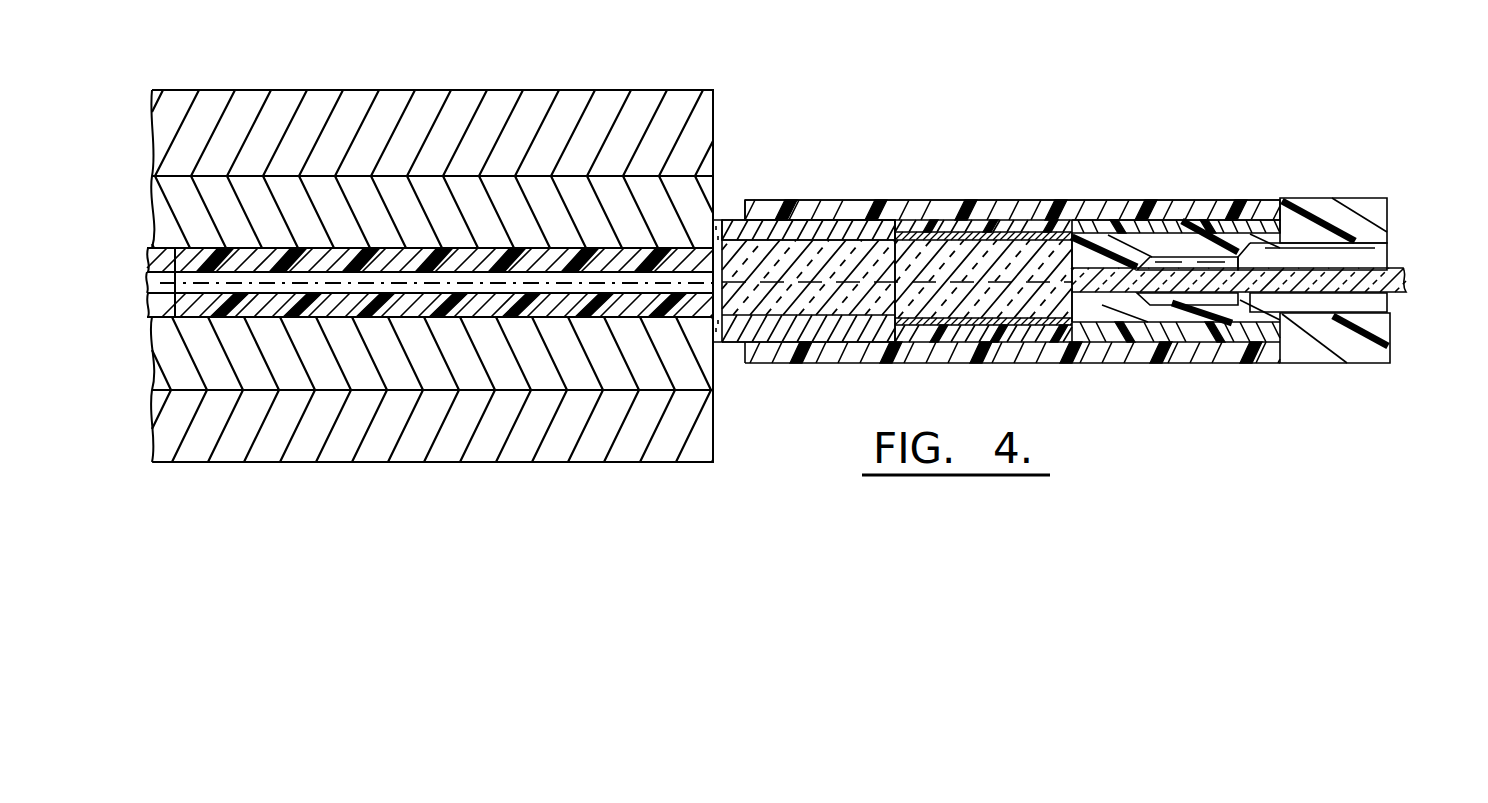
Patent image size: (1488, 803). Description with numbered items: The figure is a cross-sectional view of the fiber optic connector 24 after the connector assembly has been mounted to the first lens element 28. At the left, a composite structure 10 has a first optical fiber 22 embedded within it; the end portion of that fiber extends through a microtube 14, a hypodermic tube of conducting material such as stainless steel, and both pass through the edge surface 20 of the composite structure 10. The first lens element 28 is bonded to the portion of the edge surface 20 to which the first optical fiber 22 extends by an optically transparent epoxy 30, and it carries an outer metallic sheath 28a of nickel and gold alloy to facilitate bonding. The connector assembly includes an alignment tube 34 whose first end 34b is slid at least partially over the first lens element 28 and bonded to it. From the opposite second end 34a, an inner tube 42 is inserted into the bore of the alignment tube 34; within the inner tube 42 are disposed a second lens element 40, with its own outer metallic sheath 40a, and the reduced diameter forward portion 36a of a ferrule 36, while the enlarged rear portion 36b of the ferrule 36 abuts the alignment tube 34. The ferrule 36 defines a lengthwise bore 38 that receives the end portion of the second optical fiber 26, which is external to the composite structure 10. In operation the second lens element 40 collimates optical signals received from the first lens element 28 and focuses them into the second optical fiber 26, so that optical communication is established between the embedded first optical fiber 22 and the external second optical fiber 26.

The composite structure 10 is at (683, 60).
The microtube 14 is at (676, 254).
The edge surface 20 is at (713, 112).
The first optical fiber 22 is at (693, 290).
The fiber optic connector 24 is at (1083, 182).
The second optical fiber 26 is at (1382, 280).
The first lens element 28 is at (785, 256).
The outer metallic sheath 28a is at (848, 232).
The optically transparent epoxy 30 is at (717, 292).
The alignment tube 34 is at (1188, 350).
The second end of the alignment tube 34a is at (1278, 214).
The first end of the alignment tube 34b is at (742, 203).
The ferrule 36 is at (1350, 347).
The reduced diameter forward portion 36a is at (1140, 314).
The enlarged rear portion 36b is at (1388, 327).
The bore 38 is at (1313, 257).
The second lens element 40 is at (998, 257).
The outer metallic sheath 40a is at (962, 240).
The inner tube 42 is at (1170, 224).